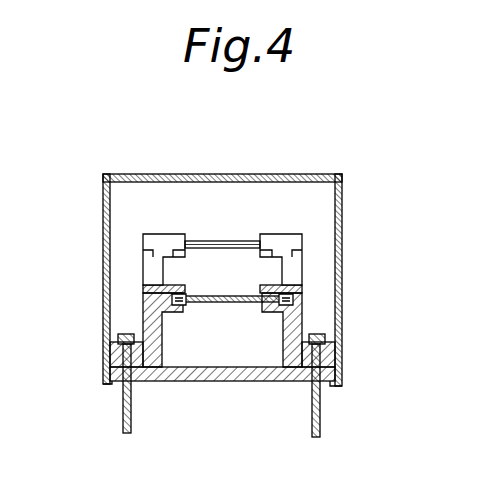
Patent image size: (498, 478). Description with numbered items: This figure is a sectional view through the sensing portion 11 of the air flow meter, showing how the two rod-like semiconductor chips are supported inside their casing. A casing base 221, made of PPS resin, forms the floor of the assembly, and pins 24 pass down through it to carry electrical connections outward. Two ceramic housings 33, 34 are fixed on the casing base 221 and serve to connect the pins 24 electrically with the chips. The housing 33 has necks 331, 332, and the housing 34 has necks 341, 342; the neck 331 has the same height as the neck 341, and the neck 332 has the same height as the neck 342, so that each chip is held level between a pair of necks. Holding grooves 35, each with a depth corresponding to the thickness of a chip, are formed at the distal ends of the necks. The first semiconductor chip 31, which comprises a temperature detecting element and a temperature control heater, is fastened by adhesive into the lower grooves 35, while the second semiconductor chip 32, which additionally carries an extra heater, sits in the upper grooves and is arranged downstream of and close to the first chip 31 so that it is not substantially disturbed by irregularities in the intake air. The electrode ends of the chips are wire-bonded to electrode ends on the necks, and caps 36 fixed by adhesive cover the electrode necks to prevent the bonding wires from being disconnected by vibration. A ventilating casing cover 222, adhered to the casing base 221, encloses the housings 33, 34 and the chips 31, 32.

The sensing portion 11 is at (151, 167).
The casing cover 222 is at (314, 174).
The casing base 221 is at (272, 382).
The pins 24 is at (123, 413).
The ceramic housing 34 is at (115, 357).
The ceramic housing 33 is at (333, 348).
The neck 341 is at (152, 263).
The neck 342 is at (147, 310).
The neck 331 is at (293, 262).
The neck 332 is at (302, 317).
The cap 36 is at (289, 246).
The second semiconductor chip 32 is at (225, 241).
The first semiconductor chip 31 is at (222, 303).
The holding grooves 35 is at (190, 306).